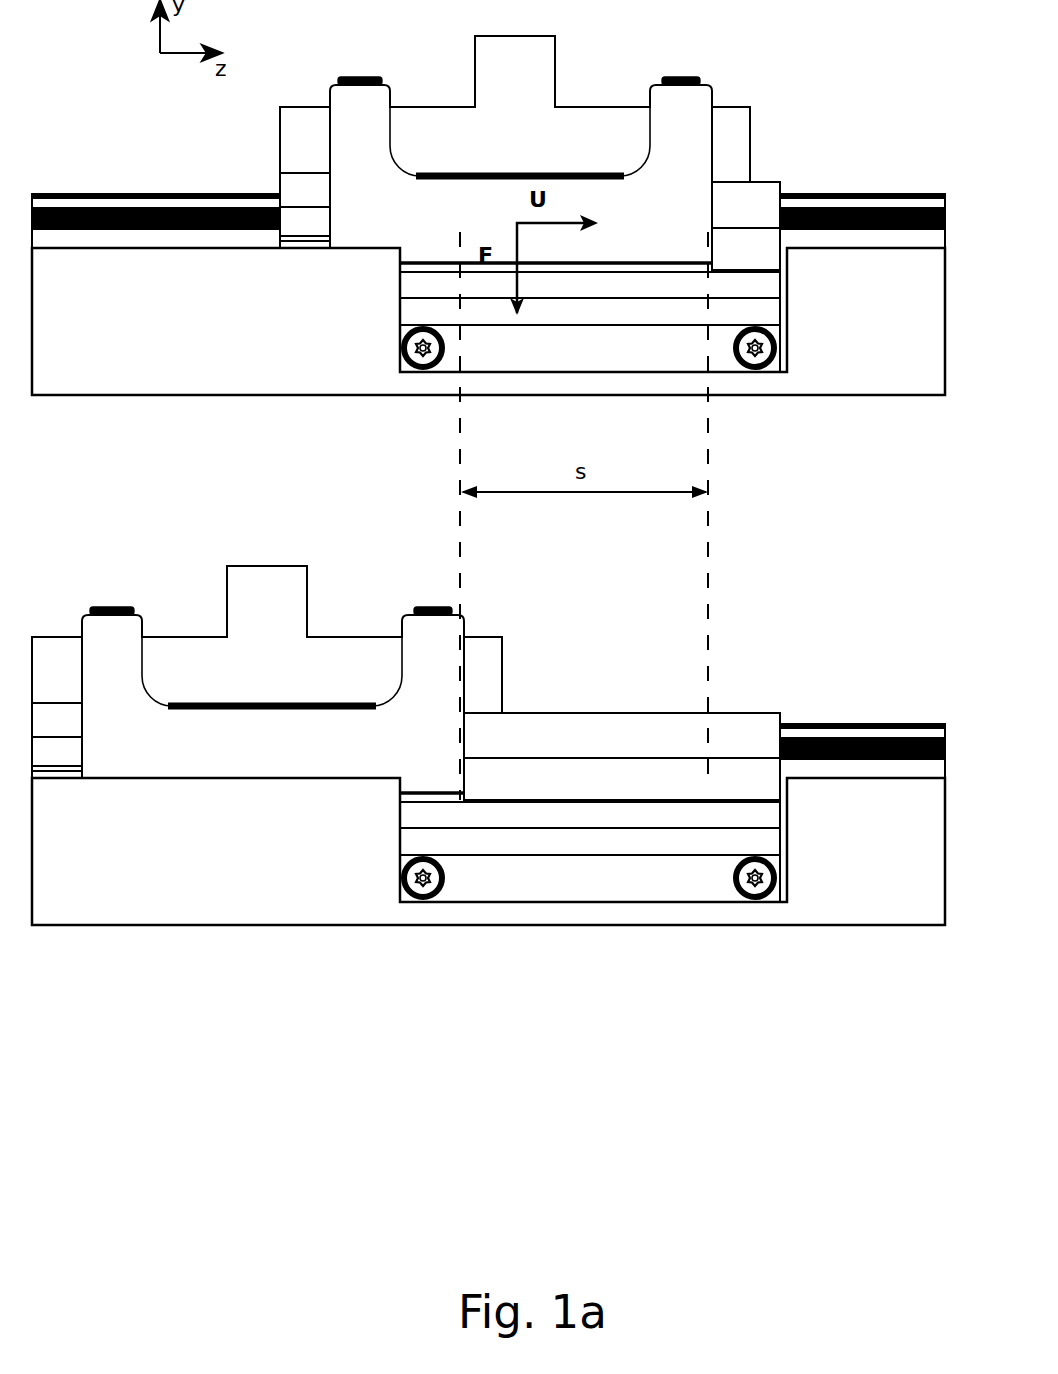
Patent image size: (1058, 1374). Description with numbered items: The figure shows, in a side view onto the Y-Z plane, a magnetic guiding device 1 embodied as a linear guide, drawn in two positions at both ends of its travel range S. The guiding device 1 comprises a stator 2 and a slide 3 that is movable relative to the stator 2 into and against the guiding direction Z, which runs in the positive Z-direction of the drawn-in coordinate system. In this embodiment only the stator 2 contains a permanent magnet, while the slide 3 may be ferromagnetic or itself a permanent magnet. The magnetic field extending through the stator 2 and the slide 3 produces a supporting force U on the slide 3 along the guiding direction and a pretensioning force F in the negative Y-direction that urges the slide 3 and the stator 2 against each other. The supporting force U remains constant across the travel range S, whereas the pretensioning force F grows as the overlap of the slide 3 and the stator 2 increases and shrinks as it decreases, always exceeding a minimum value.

The magnetic guiding device 1 is at (122, 157).
The stator 2 is at (184, 337).
The slide 3 is at (525, 107).